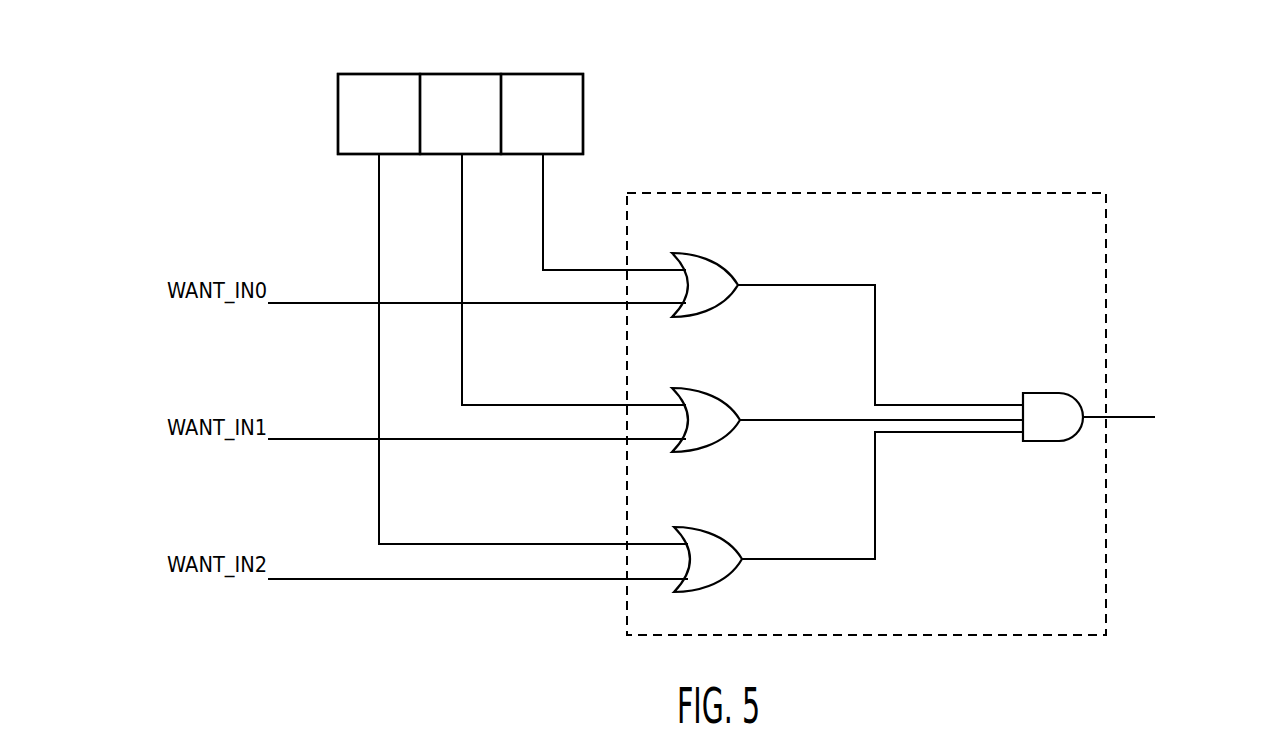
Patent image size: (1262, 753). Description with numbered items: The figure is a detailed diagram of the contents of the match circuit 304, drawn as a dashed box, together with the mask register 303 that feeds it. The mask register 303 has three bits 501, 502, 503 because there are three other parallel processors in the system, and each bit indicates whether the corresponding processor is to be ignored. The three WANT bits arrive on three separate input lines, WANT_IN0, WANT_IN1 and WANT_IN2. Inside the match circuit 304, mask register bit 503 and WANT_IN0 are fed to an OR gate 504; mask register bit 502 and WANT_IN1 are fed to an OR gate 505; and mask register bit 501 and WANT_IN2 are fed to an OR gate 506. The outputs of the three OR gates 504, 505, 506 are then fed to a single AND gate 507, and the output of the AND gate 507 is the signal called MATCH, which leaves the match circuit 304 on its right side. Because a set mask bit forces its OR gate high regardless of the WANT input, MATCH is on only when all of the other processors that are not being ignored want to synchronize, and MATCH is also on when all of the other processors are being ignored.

The mask register 303 is at (338, 104).
The match circuit 304 is at (1106, 567).
The mask register bit 501 is at (365, 133).
The mask register bit 502 is at (452, 128).
The mask register bit 503 is at (563, 113).
The OR gate 504 is at (714, 262).
The OR gate 505 is at (716, 395).
The OR gate 506 is at (716, 532).
The AND gate 507 is at (1045, 393).